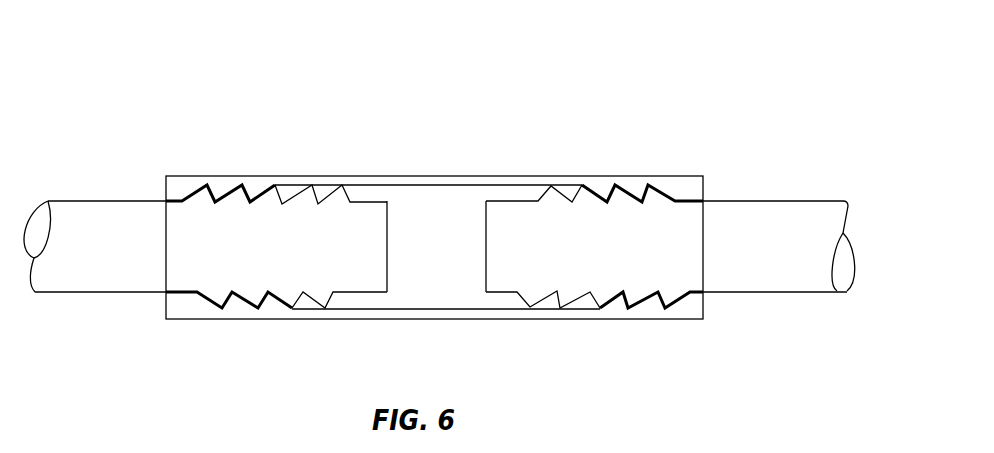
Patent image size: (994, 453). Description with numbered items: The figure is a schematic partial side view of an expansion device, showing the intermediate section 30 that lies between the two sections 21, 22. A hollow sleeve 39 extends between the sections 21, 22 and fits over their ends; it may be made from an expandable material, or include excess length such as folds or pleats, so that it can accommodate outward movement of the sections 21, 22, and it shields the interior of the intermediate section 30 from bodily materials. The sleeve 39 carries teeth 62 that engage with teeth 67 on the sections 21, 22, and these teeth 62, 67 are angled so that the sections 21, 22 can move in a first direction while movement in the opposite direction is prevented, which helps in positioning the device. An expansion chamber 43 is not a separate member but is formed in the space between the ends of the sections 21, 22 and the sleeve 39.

The intermediate section 30 is at (472, 92).
The first section 21 is at (96, 256).
The second section 22 is at (806, 256).
The sleeve 39 is at (403, 176).
The expansion chamber 43 is at (452, 254).
The teeth 62 is at (255, 189).
The teeth 67 is at (343, 204).